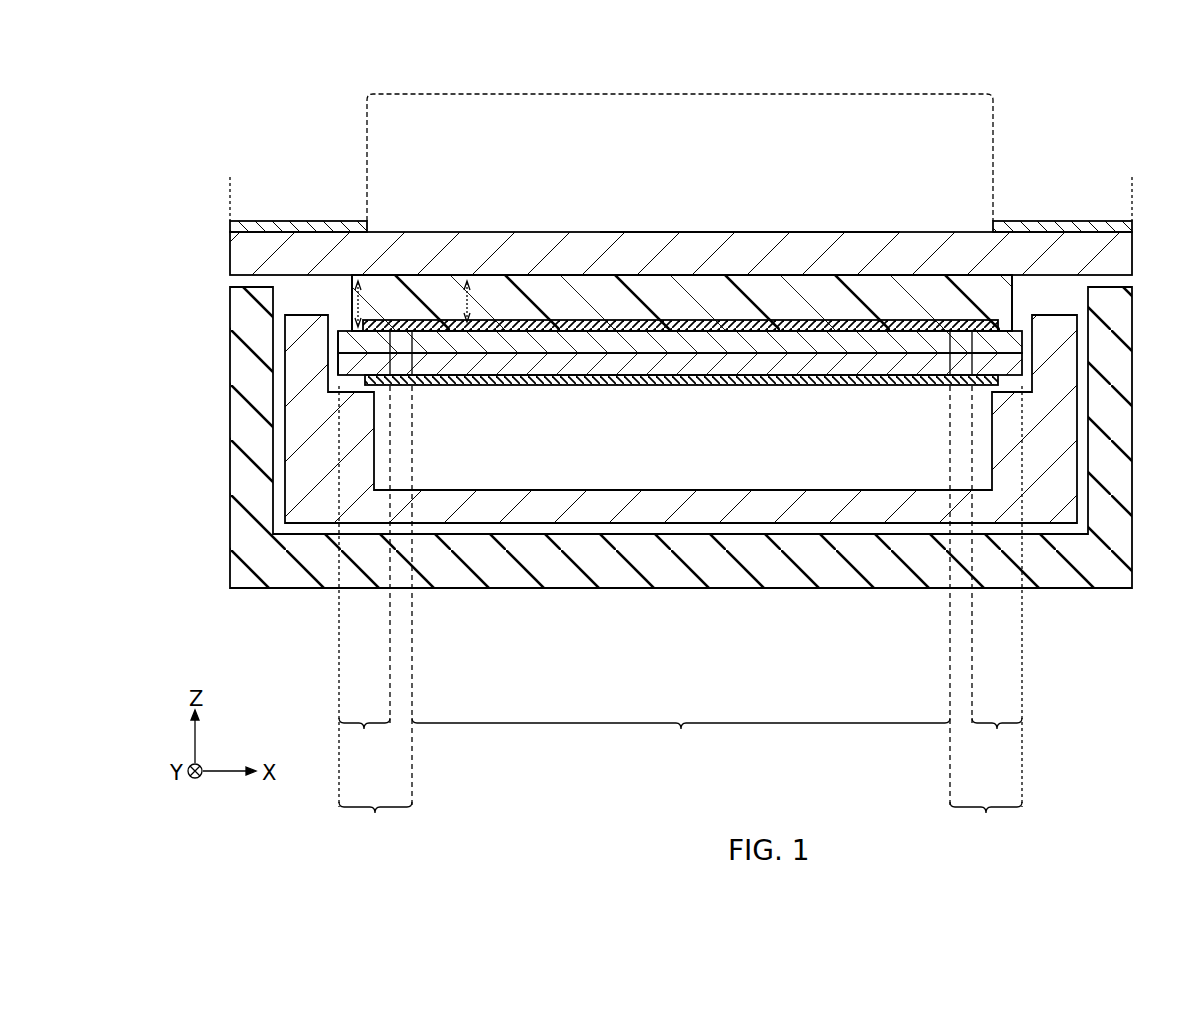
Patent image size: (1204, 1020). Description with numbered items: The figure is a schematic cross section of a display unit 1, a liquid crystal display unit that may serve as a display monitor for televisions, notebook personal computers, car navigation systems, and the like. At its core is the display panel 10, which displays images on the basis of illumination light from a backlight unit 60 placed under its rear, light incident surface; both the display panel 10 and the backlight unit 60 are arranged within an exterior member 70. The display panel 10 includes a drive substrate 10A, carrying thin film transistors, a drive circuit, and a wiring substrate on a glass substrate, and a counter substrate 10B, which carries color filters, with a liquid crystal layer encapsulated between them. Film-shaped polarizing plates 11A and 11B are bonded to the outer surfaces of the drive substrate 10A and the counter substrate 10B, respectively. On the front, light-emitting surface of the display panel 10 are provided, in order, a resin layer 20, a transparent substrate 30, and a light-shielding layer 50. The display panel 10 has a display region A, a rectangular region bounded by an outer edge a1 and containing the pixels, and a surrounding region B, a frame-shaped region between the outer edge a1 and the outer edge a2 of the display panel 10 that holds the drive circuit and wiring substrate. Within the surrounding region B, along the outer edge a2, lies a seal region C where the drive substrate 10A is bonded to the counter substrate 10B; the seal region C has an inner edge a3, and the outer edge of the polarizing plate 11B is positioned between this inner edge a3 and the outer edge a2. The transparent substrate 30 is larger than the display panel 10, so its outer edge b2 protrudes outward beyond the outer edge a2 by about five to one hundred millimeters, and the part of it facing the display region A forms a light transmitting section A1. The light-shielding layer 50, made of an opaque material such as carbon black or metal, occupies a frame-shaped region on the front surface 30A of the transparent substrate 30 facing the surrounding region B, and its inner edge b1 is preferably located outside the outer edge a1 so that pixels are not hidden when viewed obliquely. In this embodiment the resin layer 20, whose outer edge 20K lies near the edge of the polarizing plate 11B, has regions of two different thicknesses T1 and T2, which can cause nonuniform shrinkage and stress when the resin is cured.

The display unit 1 is at (1110, 89).
The display panel 10 is at (765, 489).
The drive substrate 10A is at (614, 356).
The counter substrate 10B is at (747, 340).
The polarizing plate 11A is at (502, 386).
The polarizing plate 11B is at (1013, 324).
The resin layer 20 is at (990, 305).
The outer edge of resin layer 20K is at (341, 303).
The transparent substrate 30 is at (1125, 254).
The front surface of transparent substrate 30A is at (820, 224).
The light-shielding layer 50 is at (1112, 223).
The backlight unit 60 is at (1060, 463).
The exterior member 70 is at (1123, 517).
The thickness of resin layer T1 is at (355, 360).
The thickness of resin layer T2 is at (350, 302).
The light transmitting section A1 is at (680, 143).
The display region A is at (681, 741).
The surrounding region B is at (680, 824).
The seal region C is at (680, 741).
The outer edge of display region a1 is at (683, 596).
The outer edge of display panel a2 is at (680, 596).
The inner edge of seal region a3 is at (681, 554).
The inner edge of light-shielding layer b1 is at (682, 161).
The outer edge of transparent substrate b2 is at (682, 185).